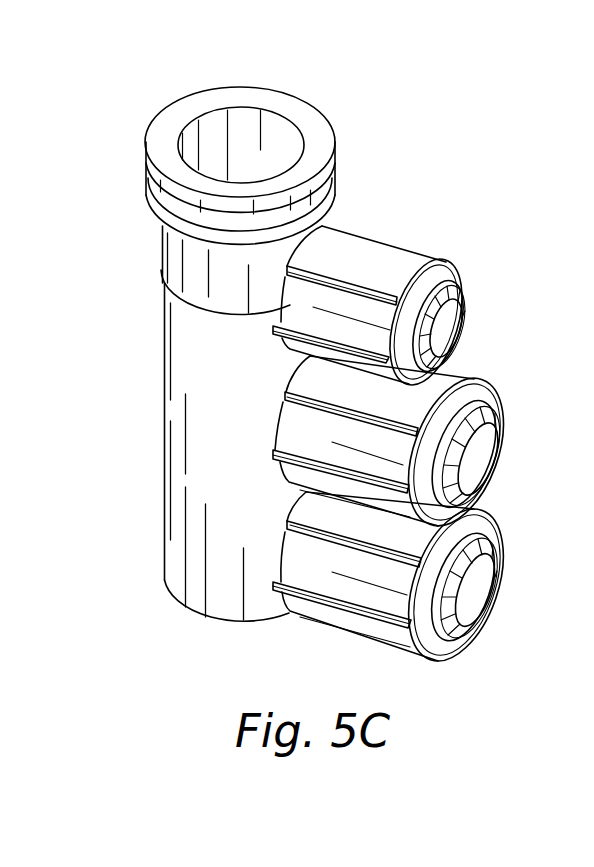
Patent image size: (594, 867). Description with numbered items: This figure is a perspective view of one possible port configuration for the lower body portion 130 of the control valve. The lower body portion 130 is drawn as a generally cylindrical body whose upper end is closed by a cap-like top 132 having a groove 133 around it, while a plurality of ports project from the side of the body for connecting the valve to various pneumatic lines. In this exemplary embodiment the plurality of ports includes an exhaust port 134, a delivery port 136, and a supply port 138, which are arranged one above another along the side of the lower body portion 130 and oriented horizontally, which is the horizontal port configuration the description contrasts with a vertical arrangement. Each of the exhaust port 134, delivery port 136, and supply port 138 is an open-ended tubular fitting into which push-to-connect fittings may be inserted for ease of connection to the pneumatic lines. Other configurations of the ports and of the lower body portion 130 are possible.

The lower body portion 130 is at (405, 120).
The inlet port cap 132 is at (147, 165).
The groove 133 is at (233, 230).
The exhaust port 134 is at (448, 270).
The delivery port 136 is at (473, 382).
The supply port 138 is at (445, 522).